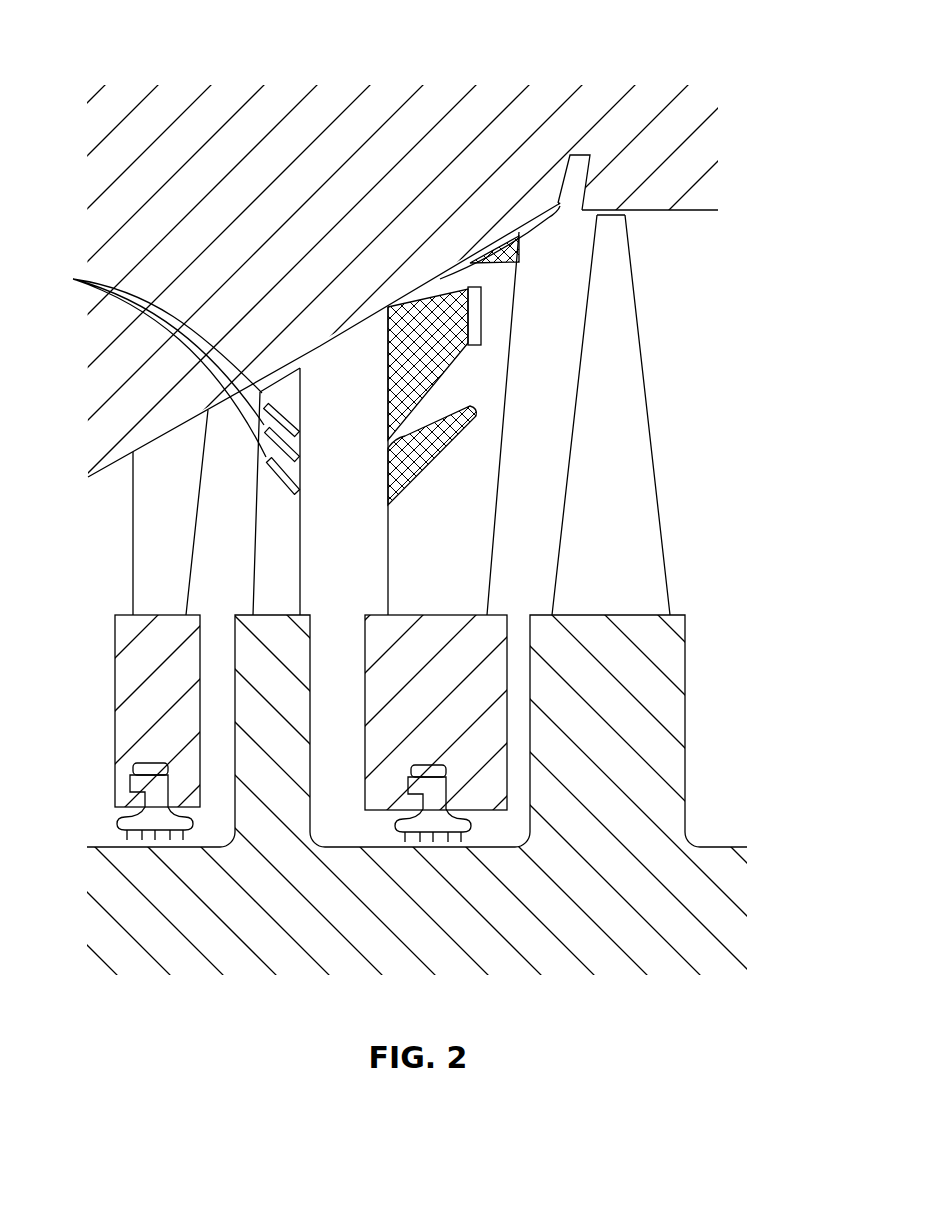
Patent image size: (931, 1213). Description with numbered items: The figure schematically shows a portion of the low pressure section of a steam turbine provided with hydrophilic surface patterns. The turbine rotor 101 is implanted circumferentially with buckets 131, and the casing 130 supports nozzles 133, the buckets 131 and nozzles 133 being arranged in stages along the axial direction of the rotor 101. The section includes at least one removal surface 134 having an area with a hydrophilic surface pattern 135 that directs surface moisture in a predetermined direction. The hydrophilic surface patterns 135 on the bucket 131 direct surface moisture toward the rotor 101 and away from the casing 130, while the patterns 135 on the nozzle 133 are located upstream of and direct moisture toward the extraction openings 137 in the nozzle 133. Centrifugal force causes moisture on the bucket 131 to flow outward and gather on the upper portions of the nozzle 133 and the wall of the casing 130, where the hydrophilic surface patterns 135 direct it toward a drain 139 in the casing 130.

The turbine rotor 101 is at (645, 742).
The casing 130 is at (675, 132).
The bucket 131 is at (155, 485).
The nozzle 133 is at (490, 383).
The removal surface 134 is at (285, 392).
The hydrophilic surface pattern 135 is at (765, 607).
The extraction opening 137 is at (482, 313).
The drain 139 is at (583, 172).